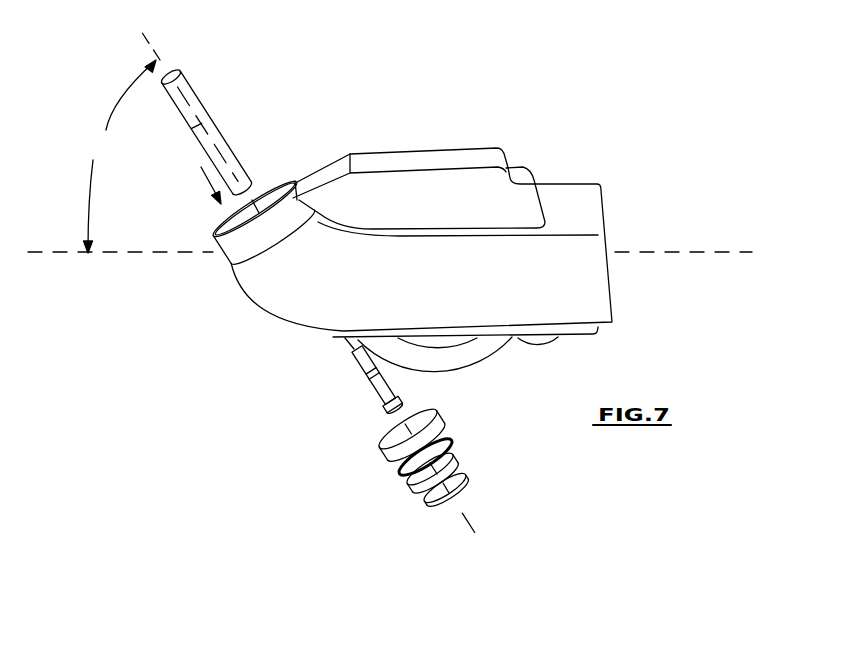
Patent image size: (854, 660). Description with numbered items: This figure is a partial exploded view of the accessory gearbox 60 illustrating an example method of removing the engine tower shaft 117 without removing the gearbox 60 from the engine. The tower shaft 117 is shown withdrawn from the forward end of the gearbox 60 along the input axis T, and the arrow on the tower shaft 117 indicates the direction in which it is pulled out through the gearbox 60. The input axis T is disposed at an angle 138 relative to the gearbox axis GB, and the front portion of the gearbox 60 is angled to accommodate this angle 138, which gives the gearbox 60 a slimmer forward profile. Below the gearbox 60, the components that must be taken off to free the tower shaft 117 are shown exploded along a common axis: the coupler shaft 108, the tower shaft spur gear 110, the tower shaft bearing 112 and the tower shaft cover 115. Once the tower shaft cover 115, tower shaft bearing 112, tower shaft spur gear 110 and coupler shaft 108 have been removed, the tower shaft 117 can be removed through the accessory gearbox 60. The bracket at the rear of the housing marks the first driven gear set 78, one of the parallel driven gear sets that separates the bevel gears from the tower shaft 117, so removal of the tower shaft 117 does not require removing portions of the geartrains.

The gearbox 60 is at (465, 249).
The first driven gear set 78 is at (573, 167).
The coupler shaft 108 is at (373, 400).
The tower shaft spur gear 110 is at (427, 415).
The tower shaft bearing 112 is at (457, 447).
The tower shaft cover 115 is at (460, 490).
The tower shaft 117 is at (237, 153).
The angle 138 is at (121, 142).
The input axis T is at (197, 127).
The gearbox axis GB is at (720, 253).